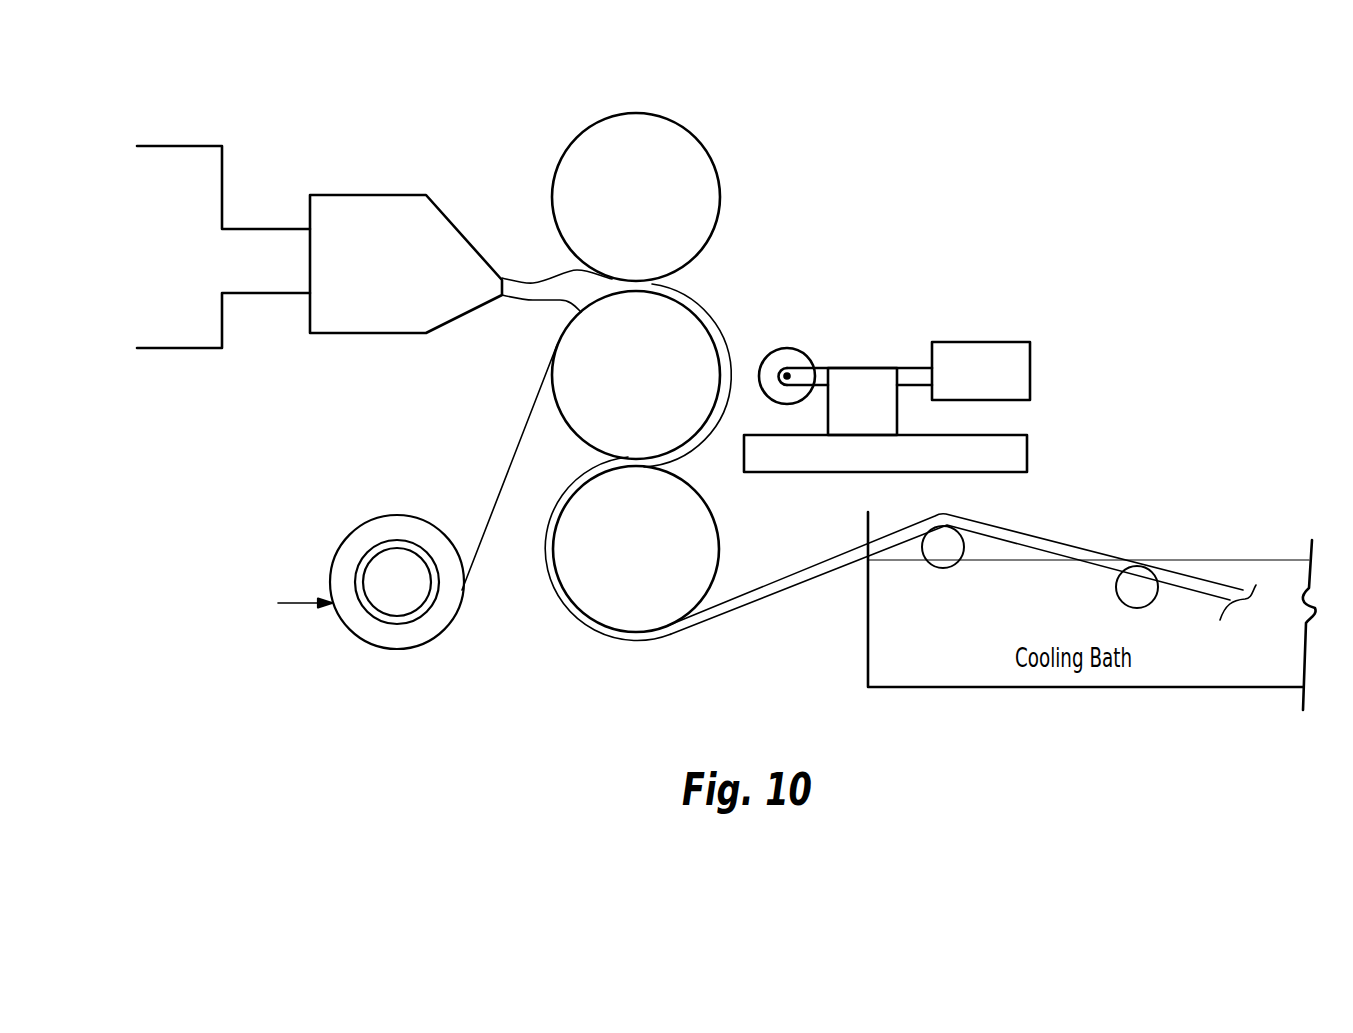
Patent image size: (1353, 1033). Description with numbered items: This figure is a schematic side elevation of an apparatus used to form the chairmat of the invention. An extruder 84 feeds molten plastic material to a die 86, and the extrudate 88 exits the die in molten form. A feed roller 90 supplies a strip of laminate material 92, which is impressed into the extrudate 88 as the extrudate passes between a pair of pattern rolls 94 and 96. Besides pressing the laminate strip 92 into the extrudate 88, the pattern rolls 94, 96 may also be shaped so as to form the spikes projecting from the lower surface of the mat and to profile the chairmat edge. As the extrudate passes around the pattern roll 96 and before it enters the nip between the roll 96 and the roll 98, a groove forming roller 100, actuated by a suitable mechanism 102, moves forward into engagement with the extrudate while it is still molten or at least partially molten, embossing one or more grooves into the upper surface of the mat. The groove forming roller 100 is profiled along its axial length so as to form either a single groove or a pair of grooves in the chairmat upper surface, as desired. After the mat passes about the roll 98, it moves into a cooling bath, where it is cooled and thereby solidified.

The extruder 84 is at (183, 134).
The die 86 is at (383, 181).
The extrudate 88 is at (535, 314).
The feed roller 90 is at (430, 623).
The strip of laminate material 92 is at (507, 479).
The pattern roll 94 is at (698, 119).
The pattern roll 96 is at (677, 335).
The roll 98 is at (695, 527).
The groove forming roller 100 is at (809, 332).
The mechanism 102 is at (970, 348).